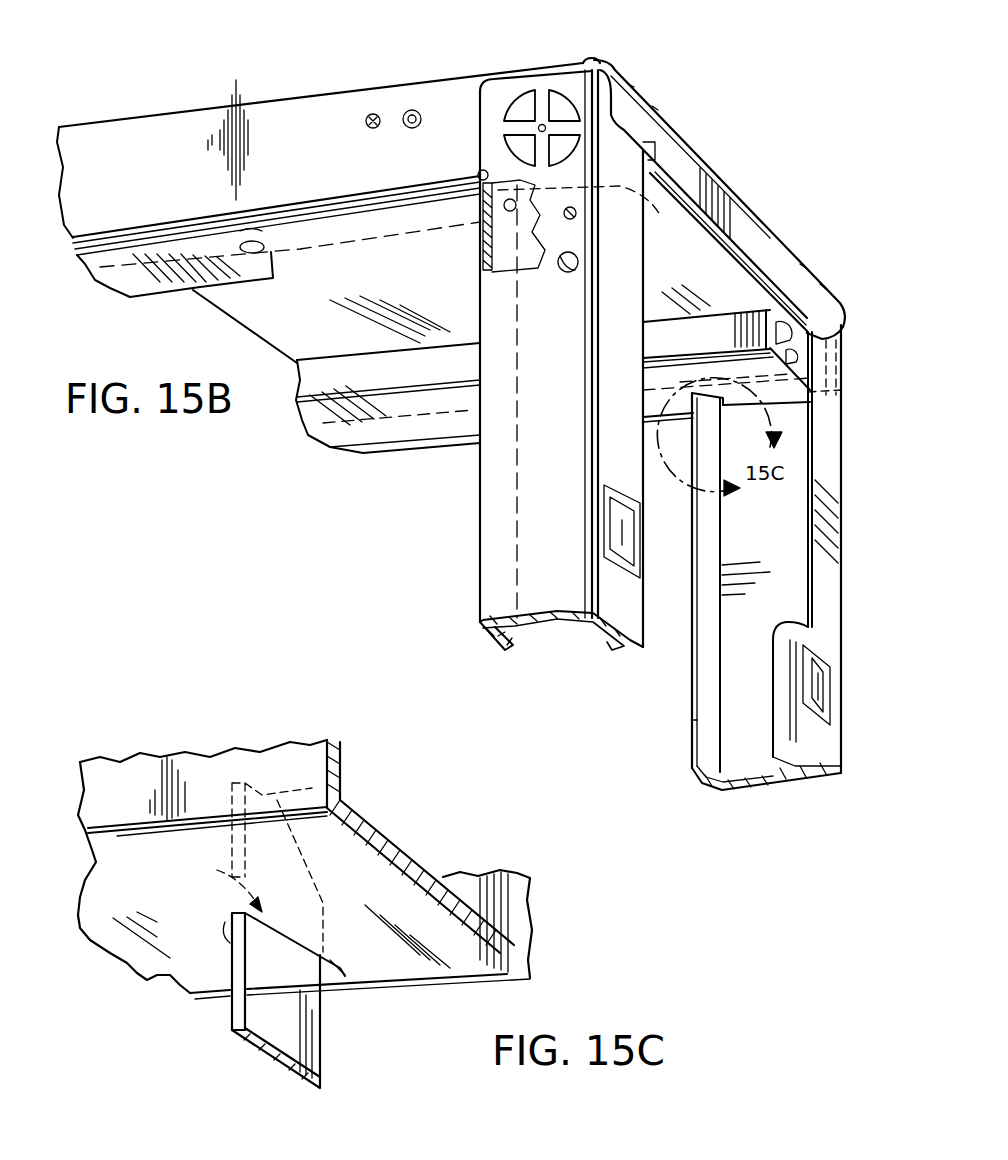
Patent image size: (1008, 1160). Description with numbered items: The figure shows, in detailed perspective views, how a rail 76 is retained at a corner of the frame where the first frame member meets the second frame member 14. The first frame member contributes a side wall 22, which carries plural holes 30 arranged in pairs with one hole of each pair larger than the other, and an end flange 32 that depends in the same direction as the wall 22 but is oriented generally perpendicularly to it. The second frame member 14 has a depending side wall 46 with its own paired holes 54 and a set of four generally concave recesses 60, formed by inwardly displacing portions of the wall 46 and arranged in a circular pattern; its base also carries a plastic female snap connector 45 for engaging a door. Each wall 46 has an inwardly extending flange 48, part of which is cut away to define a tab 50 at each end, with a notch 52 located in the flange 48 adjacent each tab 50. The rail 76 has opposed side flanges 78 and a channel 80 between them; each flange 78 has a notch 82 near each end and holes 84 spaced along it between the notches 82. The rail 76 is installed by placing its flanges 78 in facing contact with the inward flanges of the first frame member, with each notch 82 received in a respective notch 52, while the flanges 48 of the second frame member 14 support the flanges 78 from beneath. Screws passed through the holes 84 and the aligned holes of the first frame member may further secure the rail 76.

In FIG. 15B, the second frame member 14 is at (850, 492).
In FIG. 15B, the side wall 22 is at (148, 132).
In FIG. 15B, the holes 30 is at (407, 110).
In FIG. 15B, the end flange 32 is at (668, 148).
In FIG. 15B, the female snap connector 45 is at (826, 688).
In FIG. 15B, the side wall 46 is at (535, 490).
In FIG. 15B, the flange 48 is at (512, 632).
In FIG. 15C, the flange 48 is at (260, 1059).
In FIG. 15C, the tab 50 is at (312, 790).
In FIG. 15C, the notch 52 is at (223, 885).
In FIG. 15B, the holes 54 is at (568, 262).
In FIG. 15B, the concave recesses 60 is at (527, 103).
In FIG. 15B, the rail 76 is at (693, 262).
In FIG. 15C, the rail 76 is at (228, 760).
In FIG. 15B, the side flange 78 is at (335, 449).
In FIG. 15C, the side flange 78 is at (465, 872).
In FIG. 15B, the channel 80 is at (275, 344).
In FIG. 15C, the channel 80 is at (355, 811).
In FIG. 15C, the notch 82 is at (340, 987).
In FIG. 15B, the holes 84 is at (273, 280).